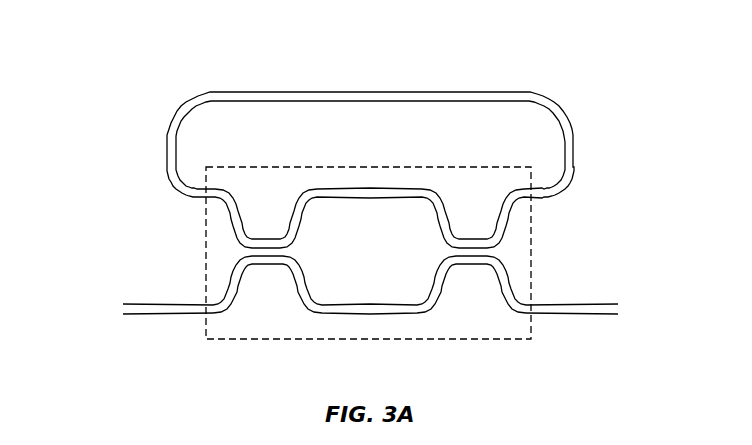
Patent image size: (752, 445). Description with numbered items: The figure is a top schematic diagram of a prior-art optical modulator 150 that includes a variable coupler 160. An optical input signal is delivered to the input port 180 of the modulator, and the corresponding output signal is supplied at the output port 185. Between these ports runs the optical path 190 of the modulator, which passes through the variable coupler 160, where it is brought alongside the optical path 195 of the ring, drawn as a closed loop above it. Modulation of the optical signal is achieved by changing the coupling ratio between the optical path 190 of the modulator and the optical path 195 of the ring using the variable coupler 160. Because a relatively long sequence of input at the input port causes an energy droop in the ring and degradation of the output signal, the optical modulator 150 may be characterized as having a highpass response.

The optical modulator 150 is at (529, 61).
The variable coupler 160 is at (532, 264).
The input port 180 is at (122, 312).
The output port 185 is at (623, 308).
The optical path of the modulator 190 is at (368, 315).
The optical path of the ring 195 is at (310, 93).